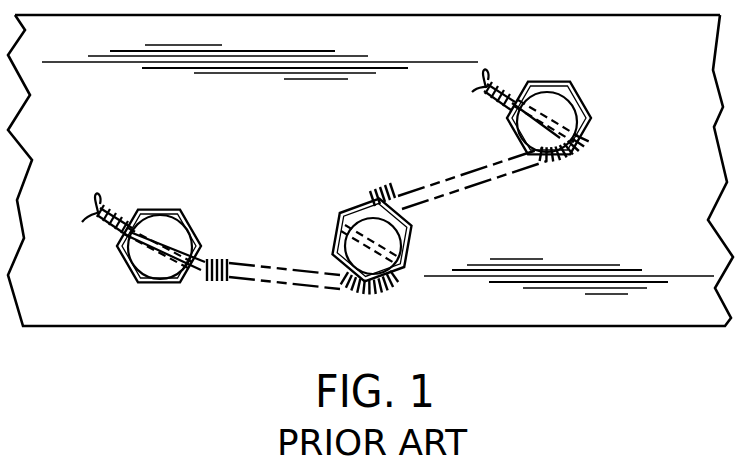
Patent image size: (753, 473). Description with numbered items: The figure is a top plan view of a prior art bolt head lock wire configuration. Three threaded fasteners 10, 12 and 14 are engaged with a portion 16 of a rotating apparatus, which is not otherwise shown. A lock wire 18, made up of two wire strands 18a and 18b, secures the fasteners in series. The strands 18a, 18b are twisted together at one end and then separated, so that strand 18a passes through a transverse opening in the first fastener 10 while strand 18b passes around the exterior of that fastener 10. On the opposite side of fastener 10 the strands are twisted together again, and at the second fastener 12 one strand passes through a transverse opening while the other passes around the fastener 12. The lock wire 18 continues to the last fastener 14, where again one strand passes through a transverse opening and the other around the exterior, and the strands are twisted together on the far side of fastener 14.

The threaded fastener 10 is at (152, 270).
The threaded fastener 12 is at (356, 247).
The threaded fastener 14 is at (527, 140).
The portion of a rotating apparatus 16 is at (497, 308).
The lock wire 18 is at (478, 186).
The wire strand 18a is at (128, 232).
The wire strand 18b is at (152, 210).